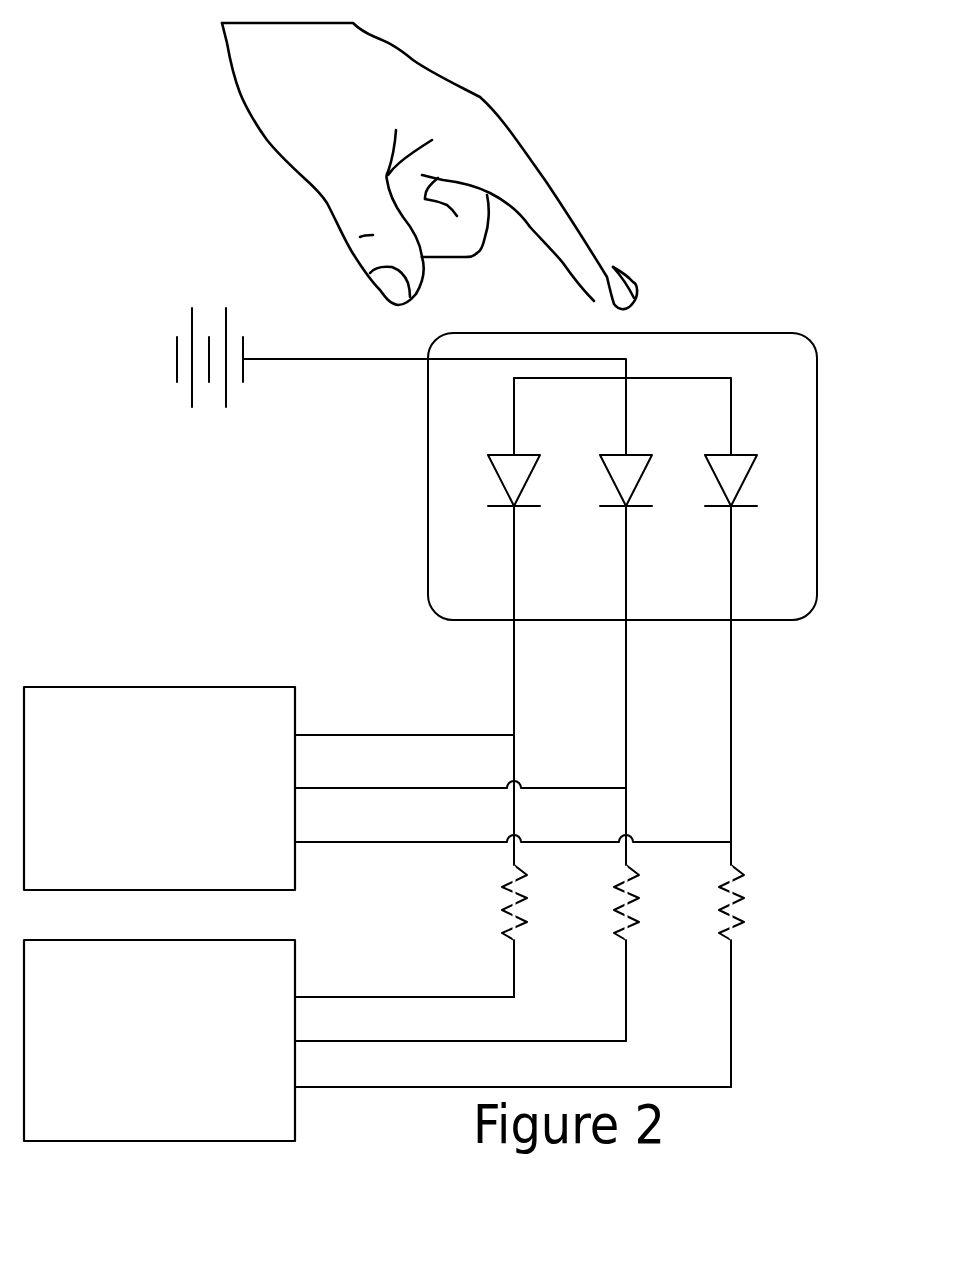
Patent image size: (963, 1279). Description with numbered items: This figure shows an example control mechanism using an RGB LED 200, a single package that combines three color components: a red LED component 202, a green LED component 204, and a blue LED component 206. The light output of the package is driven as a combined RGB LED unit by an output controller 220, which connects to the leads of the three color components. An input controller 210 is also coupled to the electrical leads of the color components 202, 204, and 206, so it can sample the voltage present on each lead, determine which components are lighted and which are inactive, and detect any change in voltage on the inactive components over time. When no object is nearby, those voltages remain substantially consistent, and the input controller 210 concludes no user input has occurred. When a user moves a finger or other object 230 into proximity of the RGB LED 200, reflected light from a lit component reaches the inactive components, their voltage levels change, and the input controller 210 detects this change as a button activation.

The RGB LED 200 is at (697, 333).
The red LED component 202 is at (503, 453).
The green LED component 204 is at (617, 453).
The blue LED component 206 is at (724, 453).
The input controller 210 is at (289, 690).
The output controller 220 is at (290, 940).
The finger 230 is at (597, 237).